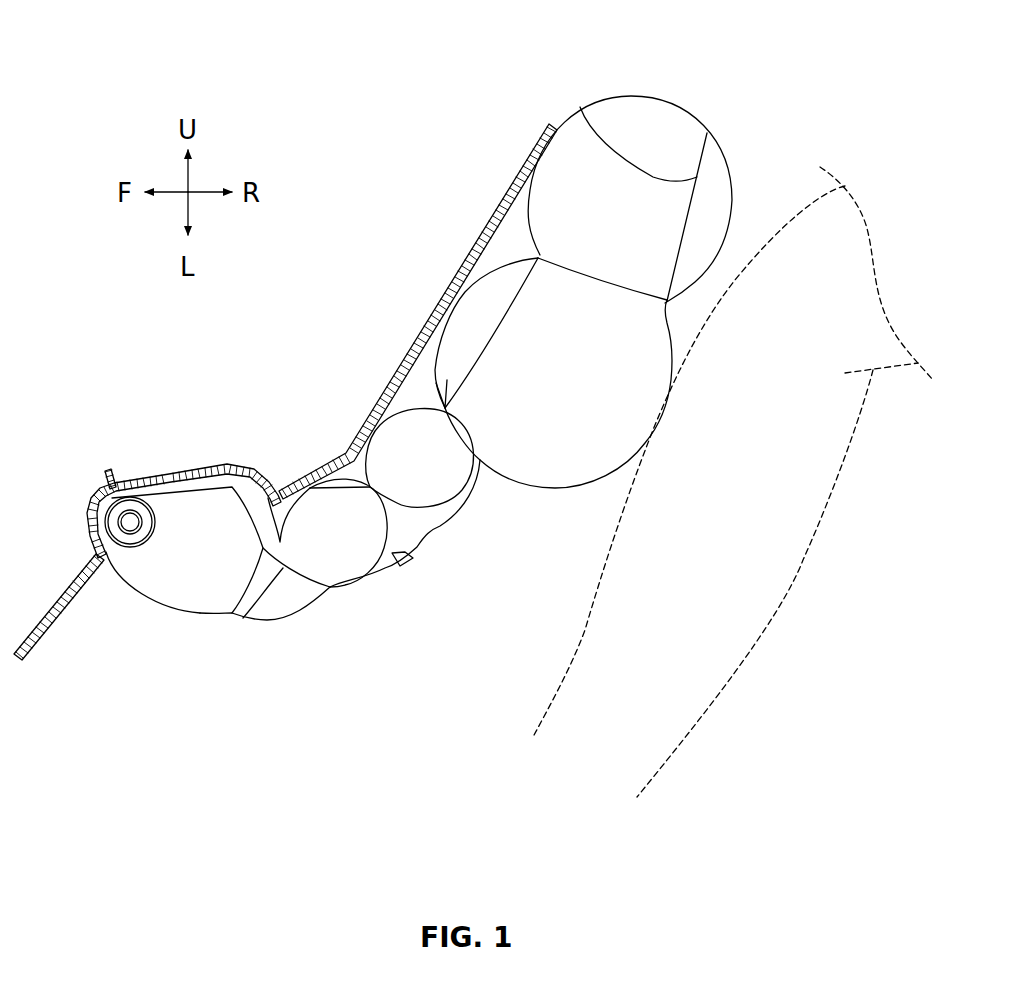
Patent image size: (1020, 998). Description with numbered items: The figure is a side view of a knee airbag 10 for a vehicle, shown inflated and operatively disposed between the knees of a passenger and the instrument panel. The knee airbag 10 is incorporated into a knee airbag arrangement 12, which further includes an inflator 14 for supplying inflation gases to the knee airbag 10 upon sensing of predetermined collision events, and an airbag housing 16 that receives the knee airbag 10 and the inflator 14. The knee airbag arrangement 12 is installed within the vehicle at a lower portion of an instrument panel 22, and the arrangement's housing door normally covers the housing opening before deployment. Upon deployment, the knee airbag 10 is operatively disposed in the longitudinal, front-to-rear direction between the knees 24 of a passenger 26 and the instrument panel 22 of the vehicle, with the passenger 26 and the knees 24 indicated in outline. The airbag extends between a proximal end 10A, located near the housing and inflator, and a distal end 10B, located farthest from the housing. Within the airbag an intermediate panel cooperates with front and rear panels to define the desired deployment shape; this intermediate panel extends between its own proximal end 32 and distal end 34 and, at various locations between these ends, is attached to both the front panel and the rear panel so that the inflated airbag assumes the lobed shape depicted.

The knee airbag 10 is at (662, 93).
The proximal end 10A is at (122, 572).
The distal end 10B is at (690, 112).
The knee airbag arrangement 12 is at (267, 639).
The inflator 14 is at (110, 524).
The airbag housing 16 is at (220, 464).
The instrument panel 22 is at (449, 292).
The knees 24 is at (722, 693).
The passenger 26 is at (812, 548).
The proximal end 32 is at (232, 613).
The distal end 34 is at (580, 107).